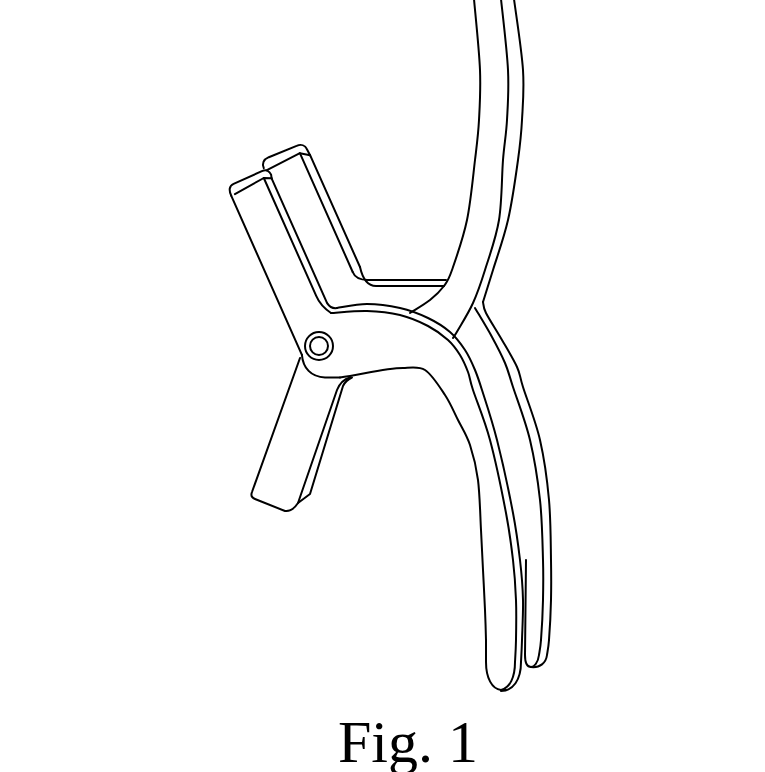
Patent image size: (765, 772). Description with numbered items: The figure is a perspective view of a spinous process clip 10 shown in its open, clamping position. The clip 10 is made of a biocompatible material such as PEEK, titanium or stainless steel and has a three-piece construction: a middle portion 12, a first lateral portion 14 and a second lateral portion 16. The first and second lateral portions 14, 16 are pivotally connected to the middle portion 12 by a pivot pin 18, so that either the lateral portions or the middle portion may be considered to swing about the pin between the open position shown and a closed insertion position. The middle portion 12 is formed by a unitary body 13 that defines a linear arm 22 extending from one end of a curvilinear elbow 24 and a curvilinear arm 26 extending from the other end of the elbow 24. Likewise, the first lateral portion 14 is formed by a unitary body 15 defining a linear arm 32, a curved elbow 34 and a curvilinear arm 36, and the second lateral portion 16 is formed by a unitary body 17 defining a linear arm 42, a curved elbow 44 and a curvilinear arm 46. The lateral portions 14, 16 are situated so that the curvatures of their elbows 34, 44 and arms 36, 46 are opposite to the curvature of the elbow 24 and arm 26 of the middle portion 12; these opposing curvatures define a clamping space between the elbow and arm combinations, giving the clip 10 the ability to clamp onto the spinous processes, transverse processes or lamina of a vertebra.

The spinous process clip 10 is at (133, 90).
The middle portion 12 is at (240, 415).
The unitary body 13 is at (517, 229).
The first lateral portion 14 is at (240, 250).
The unitary body 15 is at (480, 645).
The second lateral portion 16 is at (368, 188).
The unitary body 17 is at (566, 566).
The pivot pin 18 is at (310, 344).
The arm 22 is at (273, 492).
The elbow 24 is at (375, 372).
The arm 26 is at (500, 154).
The arm 32 is at (247, 203).
The elbow 34 is at (350, 348).
The arm 36 is at (470, 443).
The arm 42 is at (297, 147).
The elbow 44 is at (366, 277).
The arm 46 is at (518, 444).